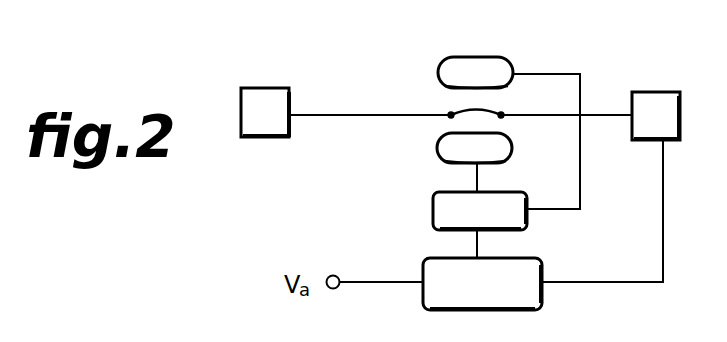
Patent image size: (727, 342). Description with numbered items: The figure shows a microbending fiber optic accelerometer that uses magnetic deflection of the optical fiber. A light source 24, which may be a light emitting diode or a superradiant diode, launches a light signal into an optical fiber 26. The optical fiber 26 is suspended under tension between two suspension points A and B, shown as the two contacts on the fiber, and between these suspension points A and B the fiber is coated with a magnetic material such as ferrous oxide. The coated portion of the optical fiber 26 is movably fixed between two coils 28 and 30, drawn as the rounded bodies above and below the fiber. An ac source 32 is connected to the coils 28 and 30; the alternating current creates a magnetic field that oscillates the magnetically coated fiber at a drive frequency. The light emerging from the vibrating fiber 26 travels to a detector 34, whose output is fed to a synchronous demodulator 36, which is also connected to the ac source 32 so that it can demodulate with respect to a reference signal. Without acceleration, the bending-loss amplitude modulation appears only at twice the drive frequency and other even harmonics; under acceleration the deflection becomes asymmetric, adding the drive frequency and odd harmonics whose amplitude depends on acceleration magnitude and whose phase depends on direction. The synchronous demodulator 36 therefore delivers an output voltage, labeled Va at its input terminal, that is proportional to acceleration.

The light source 24 is at (287, 92).
The optical fiber 26 is at (362, 117).
The suspension point A is at (449, 113).
The suspension point B is at (503, 117).
The coil 28 is at (438, 151).
The coil 30 is at (501, 67).
The ac source 32 is at (525, 218).
The detector 34 is at (651, 92).
The synchronous demodulator 36 is at (534, 303).